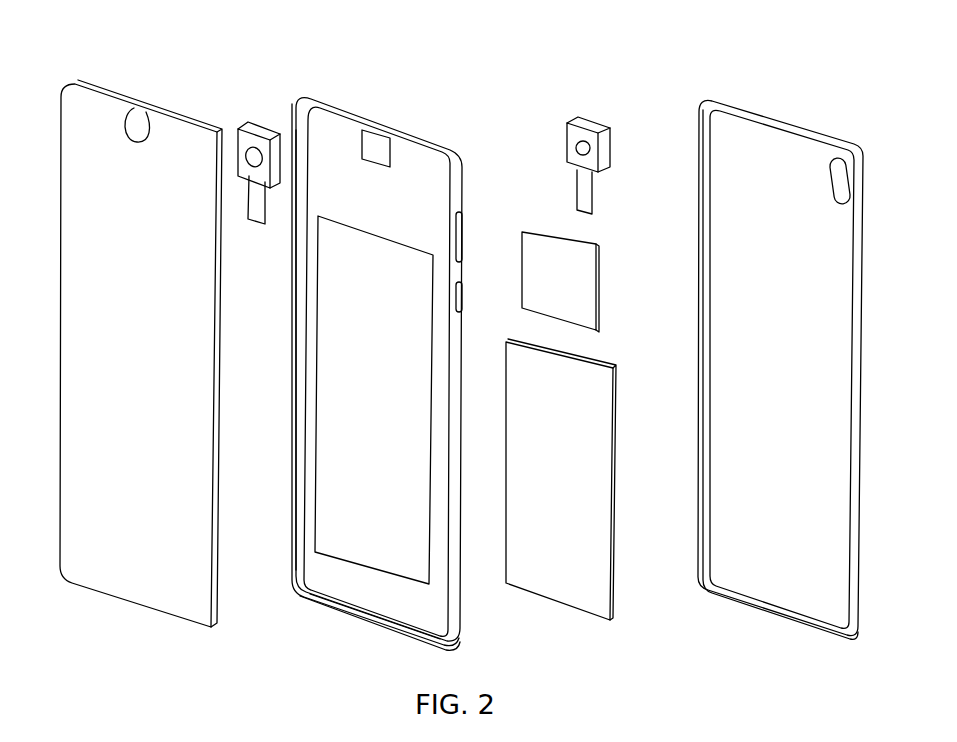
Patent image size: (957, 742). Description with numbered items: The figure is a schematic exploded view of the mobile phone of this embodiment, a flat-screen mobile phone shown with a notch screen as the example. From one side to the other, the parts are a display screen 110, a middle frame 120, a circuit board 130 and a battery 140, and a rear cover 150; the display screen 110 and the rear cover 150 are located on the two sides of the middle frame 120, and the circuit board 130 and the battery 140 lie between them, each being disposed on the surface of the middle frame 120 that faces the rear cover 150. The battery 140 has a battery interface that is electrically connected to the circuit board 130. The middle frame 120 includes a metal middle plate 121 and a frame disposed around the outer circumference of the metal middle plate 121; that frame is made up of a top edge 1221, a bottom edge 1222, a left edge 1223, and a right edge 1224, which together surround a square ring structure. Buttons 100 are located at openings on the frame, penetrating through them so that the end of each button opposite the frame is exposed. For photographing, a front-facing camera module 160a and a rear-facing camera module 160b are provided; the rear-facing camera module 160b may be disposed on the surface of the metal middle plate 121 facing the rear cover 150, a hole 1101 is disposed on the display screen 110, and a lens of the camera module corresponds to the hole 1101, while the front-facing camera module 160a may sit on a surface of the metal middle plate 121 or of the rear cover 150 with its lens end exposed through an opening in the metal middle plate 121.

The button 100 is at (466, 224).
The display screen 110 is at (113, 93).
The hole 1101 is at (151, 113).
The middle frame 120 is at (381, 342).
The metal middle plate 121 is at (428, 184).
The top edge 1221 is at (408, 128).
The bottom edge 1222 is at (331, 602).
The left edge 1223 is at (300, 337).
The right edge 1224 is at (452, 353).
The circuit board 130 is at (584, 311).
The battery 140 is at (561, 582).
The rear cover 150 is at (792, 160).
The front-facing camera module 160a is at (258, 120).
The rear-facing camera module 160b is at (586, 121).